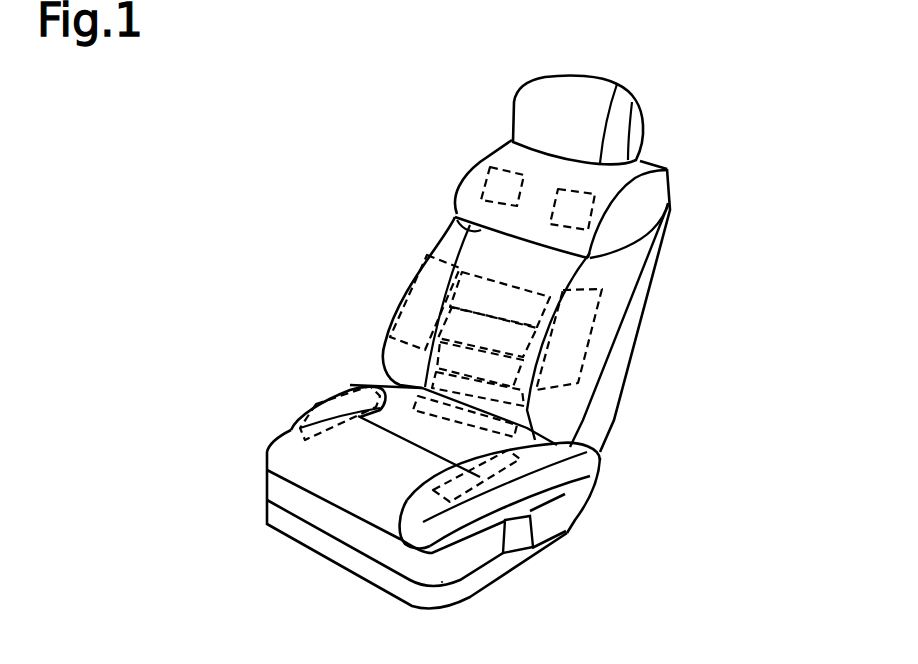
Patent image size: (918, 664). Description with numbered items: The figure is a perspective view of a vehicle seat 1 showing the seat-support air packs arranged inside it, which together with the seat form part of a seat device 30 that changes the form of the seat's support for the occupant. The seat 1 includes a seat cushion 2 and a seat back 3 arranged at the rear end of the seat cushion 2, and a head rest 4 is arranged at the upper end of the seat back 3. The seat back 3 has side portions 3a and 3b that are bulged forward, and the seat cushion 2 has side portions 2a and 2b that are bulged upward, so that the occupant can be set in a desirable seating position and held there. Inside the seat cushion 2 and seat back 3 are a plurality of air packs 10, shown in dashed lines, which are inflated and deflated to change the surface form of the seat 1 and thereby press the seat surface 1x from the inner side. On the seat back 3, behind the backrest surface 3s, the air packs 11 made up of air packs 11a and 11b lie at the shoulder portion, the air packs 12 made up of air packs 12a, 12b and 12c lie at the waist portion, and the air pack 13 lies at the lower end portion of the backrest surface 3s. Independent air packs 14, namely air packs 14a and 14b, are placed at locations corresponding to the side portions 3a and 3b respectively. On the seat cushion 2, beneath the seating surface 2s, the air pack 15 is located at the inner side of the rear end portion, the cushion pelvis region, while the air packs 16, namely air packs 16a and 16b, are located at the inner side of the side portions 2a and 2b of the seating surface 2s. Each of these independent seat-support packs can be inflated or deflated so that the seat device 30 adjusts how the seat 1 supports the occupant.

The vehicle seat 1 is at (239, 109).
The seat device 30 is at (469, 341).
The seat surface 1x is at (335, 363).
The seat cushion 2 is at (433, 473).
The side portion of seat cushion 2a is at (333, 400).
The side portion of seat cushion 2b is at (582, 488).
The seating surface 2s is at (388, 466).
The seat back 3 is at (435, 325).
The side portion of seat back 3a is at (457, 238).
The side portion of seat back 3b is at (612, 275).
The backrest surface 3s is at (518, 263).
The head rest 4 is at (645, 124).
The air packs 10 is at (469, 346).
The air packs 11 is at (561, 184).
The air pack 11a is at (488, 168).
The air pack 11b is at (595, 210).
The air packs 12 is at (640, 343).
The air pack 12a is at (537, 328).
The air pack 12b is at (523, 357).
The air pack 12c is at (513, 387).
The air pack 13 is at (524, 406).
The air packs 14 is at (513, 321).
The air pack 14a is at (415, 284).
The air pack 14b is at (604, 303).
The air pack 15 is at (362, 384).
The air packs 16 is at (421, 459).
The air pack 16a is at (317, 404).
The air pack 16b is at (533, 470).